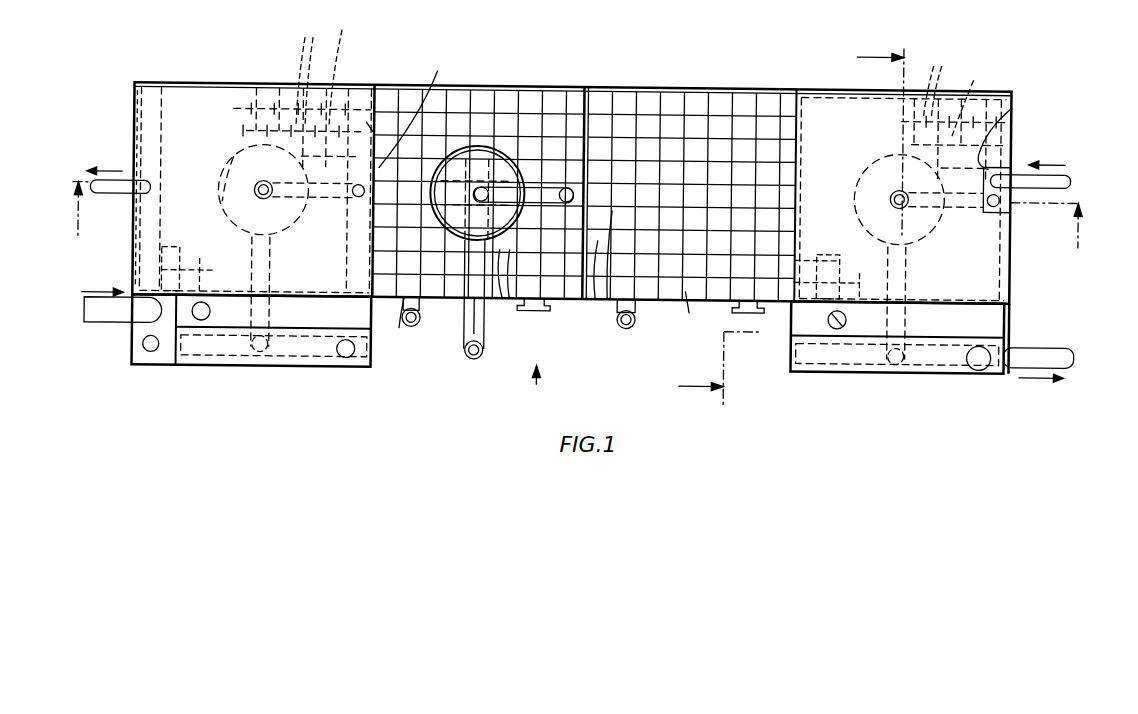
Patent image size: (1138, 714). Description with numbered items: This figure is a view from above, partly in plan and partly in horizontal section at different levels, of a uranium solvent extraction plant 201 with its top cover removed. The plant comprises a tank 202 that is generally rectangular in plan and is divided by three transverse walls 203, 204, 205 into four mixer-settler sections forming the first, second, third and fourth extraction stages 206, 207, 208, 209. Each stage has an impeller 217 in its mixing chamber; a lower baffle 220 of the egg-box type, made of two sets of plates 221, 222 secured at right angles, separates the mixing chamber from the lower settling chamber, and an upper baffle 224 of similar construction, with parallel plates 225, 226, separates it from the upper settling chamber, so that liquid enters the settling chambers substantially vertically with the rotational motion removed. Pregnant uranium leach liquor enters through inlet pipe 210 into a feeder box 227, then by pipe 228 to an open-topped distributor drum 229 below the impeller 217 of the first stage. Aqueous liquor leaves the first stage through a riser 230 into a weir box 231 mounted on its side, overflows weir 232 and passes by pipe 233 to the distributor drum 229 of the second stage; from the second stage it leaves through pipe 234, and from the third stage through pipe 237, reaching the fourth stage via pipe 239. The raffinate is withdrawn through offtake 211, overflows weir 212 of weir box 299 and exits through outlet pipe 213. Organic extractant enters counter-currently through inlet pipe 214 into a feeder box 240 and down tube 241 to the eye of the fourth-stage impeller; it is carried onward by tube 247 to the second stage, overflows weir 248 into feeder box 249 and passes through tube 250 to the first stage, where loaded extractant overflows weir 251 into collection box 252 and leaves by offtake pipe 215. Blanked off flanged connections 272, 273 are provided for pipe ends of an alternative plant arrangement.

The uranium solvent extraction plant 201 is at (638, 86).
The tank 202 is at (712, 100).
The transverse wall 203 is at (380, 98).
The transverse wall 204 is at (593, 120).
The transverse wall 205 is at (800, 110).
The first extraction stage 206 is at (218, 118).
The second extraction stage 207 is at (481, 120).
The third extraction stage 208 is at (758, 108).
The fourth extraction stage 209 is at (996, 110).
The inlet pipe 210 is at (110, 315).
The offtake 211 is at (838, 328).
The weir 212 is at (935, 360).
The outlet pipe 213 is at (1038, 352).
The inlet pipe 214 is at (1020, 170).
The offtake pipe 215 is at (110, 190).
The impeller 217 is at (214, 192).
The lower baffle 220 is at (543, 320).
The plates 221 is at (672, 102).
The plates 222 is at (510, 300).
The upper baffle 224 is at (353, 64).
The parallel plates 225 is at (298, 67).
The parallel plates 226 is at (258, 104).
The feeder box 227 is at (150, 358).
The pipe 228 is at (272, 254).
The distributor drum 229 is at (506, 150).
The riser 230 is at (203, 326).
The weir box 231 is at (288, 368).
The weir 232 is at (345, 362).
The pipe 233 is at (356, 360).
The pipe 234 is at (414, 328).
The pipe 237 is at (628, 328).
The pipe 239 is at (895, 345).
The feeder box 240 is at (1010, 118).
The tube 241 is at (1005, 222).
The tube 247 is at (549, 186).
The weir 248 is at (421, 107).
The feeder box 249 is at (346, 100).
The tube 250 is at (354, 200).
The weir 251 is at (158, 104).
The collection box 252 is at (150, 160).
The blanked off flanged connection 272 is at (540, 314).
The blanked off flanged connection 273 is at (750, 314).
The lower right box outline 299 is at (985, 372).